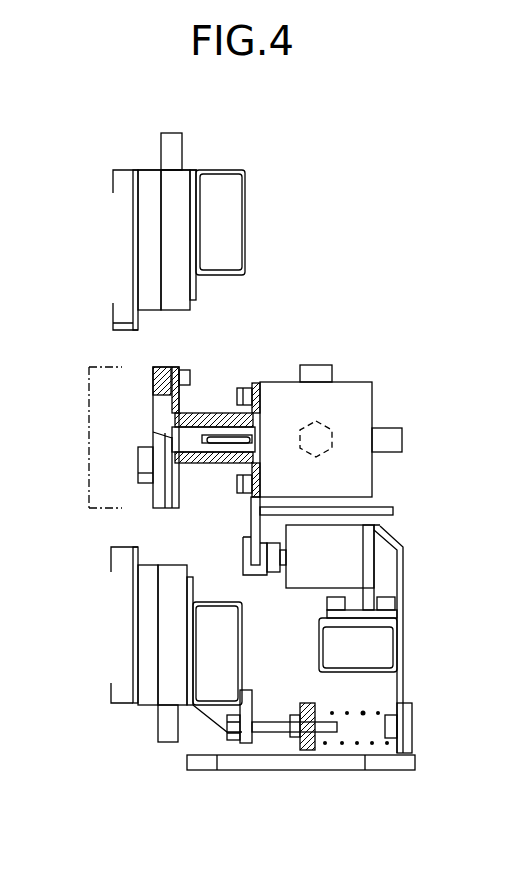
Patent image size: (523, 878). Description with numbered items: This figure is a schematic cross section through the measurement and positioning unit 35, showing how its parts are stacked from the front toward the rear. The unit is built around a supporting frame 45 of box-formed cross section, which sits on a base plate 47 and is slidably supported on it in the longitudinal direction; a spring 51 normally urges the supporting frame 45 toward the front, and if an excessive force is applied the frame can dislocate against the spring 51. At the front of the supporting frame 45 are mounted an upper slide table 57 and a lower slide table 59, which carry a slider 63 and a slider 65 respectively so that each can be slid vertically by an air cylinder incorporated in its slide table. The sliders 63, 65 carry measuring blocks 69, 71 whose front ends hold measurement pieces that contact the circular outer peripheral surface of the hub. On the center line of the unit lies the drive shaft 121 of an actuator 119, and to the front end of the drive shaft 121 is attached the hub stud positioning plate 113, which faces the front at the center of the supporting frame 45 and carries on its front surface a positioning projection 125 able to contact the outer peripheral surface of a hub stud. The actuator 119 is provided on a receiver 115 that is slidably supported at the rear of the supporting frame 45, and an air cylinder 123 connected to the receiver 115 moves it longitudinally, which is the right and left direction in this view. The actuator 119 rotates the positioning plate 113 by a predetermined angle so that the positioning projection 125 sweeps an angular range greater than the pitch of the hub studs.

The measurement and positioning unit 35 is at (312, 250).
The supporting frame 45 is at (245, 202).
The base plate 47 is at (197, 770).
The spring 51 is at (363, 713).
The upper slide table 57 is at (180, 183).
The lower slide table 59 is at (167, 692).
The slider 63 is at (150, 178).
The slider 65 is at (148, 692).
The measuring block 69 is at (120, 180).
The measuring block 71 is at (112, 690).
The hub stud positioning plate 113 is at (158, 420).
The receiver 115 is at (393, 505).
The actuator 119 is at (363, 400).
The drive shaft 121 is at (218, 437).
The air cylinder 123 is at (353, 547).
The positioning projection 125 is at (138, 463).